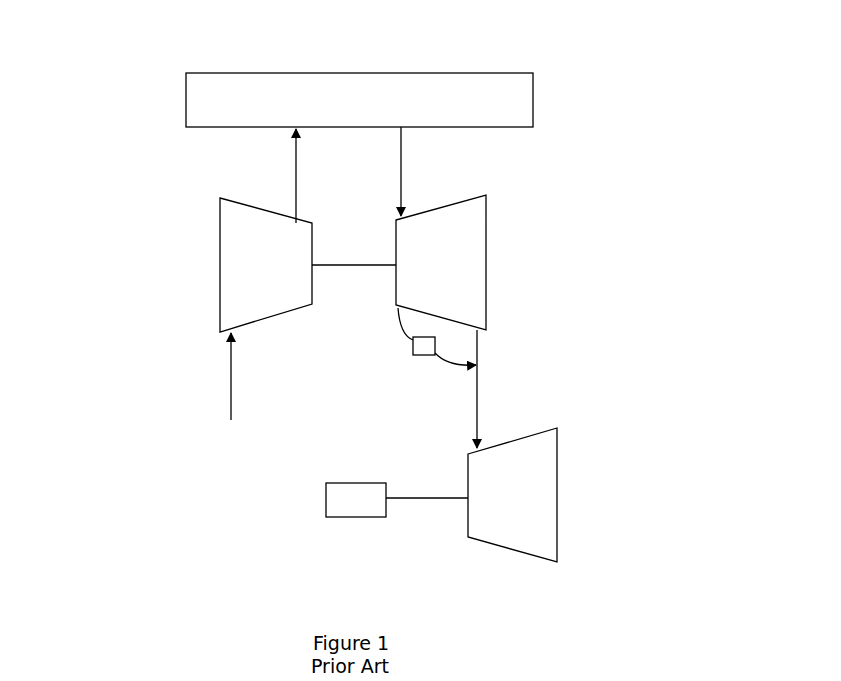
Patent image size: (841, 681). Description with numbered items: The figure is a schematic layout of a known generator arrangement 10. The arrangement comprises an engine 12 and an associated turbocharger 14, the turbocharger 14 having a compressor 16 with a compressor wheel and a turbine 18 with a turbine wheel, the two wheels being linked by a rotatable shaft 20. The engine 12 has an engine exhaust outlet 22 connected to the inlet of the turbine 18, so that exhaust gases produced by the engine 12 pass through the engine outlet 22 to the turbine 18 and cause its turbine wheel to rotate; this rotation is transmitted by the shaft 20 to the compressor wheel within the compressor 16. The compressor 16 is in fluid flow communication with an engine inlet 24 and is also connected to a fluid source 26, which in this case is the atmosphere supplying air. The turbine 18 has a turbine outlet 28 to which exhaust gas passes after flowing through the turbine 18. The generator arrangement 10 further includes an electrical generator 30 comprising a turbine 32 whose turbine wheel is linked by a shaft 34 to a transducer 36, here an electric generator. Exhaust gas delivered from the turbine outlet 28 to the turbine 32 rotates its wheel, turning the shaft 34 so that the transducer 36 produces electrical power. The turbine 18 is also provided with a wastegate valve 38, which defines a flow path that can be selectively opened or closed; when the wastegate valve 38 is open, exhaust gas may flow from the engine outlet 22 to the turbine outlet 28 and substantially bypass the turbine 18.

The generator arrangement 10 is at (634, 192).
The engine 12 is at (358, 81).
The turbocharger 14 is at (186, 186).
The compressor 16 is at (247, 283).
The turbine 18 is at (460, 253).
The rotatable shaft 20 is at (357, 265).
The engine exhaust outlet 22 is at (401, 170).
The engine inlet 24 is at (296, 168).
The fluid source 26 is at (241, 446).
The turbine outlet 28 is at (477, 411).
The electrical generator 30 is at (453, 541).
The turbine 32 is at (535, 483).
The shaft 34 is at (433, 498).
The transducer 36 is at (350, 503).
The wastegate valve 38 is at (435, 347).